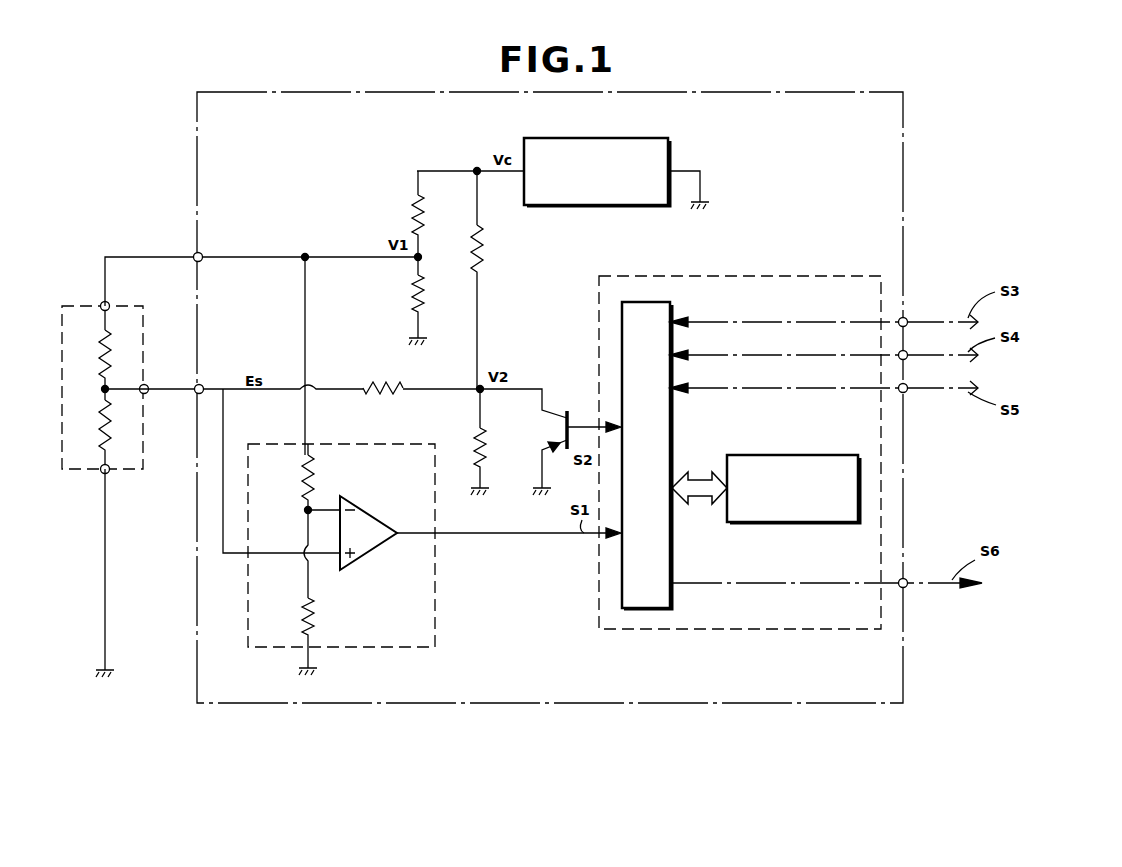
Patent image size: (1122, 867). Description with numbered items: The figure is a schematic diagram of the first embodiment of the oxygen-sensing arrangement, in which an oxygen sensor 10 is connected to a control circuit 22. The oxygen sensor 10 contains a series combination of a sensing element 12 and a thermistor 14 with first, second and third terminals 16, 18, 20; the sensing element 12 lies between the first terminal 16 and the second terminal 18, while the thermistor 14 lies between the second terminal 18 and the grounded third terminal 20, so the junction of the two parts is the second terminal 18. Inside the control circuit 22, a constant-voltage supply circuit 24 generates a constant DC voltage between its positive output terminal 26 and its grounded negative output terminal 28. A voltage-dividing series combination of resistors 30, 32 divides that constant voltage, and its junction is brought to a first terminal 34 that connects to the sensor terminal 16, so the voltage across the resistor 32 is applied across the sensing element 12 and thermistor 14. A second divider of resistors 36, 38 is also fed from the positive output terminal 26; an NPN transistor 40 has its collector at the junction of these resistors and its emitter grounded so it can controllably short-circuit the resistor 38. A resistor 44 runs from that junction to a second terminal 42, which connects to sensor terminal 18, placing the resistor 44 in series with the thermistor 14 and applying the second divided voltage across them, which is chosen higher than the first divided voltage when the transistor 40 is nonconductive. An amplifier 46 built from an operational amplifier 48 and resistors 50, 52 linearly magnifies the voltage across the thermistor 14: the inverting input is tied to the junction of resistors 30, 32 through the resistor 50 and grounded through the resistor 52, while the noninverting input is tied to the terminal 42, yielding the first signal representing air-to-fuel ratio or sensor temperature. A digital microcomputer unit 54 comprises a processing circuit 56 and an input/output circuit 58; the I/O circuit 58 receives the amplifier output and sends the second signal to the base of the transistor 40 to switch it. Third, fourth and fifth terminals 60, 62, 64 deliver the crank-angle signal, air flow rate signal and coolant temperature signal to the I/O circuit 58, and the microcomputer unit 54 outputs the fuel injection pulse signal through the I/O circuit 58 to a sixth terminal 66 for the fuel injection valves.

The oxygen sensor 10 is at (72, 296).
The sensing element 12 is at (100, 361).
The thermistor 14 is at (100, 425).
The first terminal 16 is at (110, 302).
The second terminal 18 is at (148, 384).
The third terminal 20 is at (110, 473).
The control circuit 22 is at (237, 704).
The constant-voltage supply circuit 24 is at (668, 150).
The positive output terminal 26 is at (522, 176).
The negative output terminal 28 is at (670, 176).
The resistor 30 is at (425, 205).
The resistor 32 is at (425, 290).
The first terminal 34 is at (202, 252).
The resistor 36 is at (487, 252).
The resistor 38 is at (488, 440).
The NPN transistor 40 is at (575, 412).
The second terminal 42 is at (205, 384).
The resistor 44 is at (378, 380).
The amplifier 46 is at (436, 618).
The operational amplifier 48 is at (378, 540).
The resistor 50 is at (318, 468).
The resistor 52 is at (298, 622).
The digital microcomputer unit 54 is at (840, 272).
The processing circuit 56 is at (842, 453).
The input/output circuit 58 is at (673, 438).
The third terminal 60 is at (907, 318).
The fourth terminal 62 is at (907, 351).
The fifth terminal 64 is at (907, 384).
The sixth terminal 66 is at (907, 579).